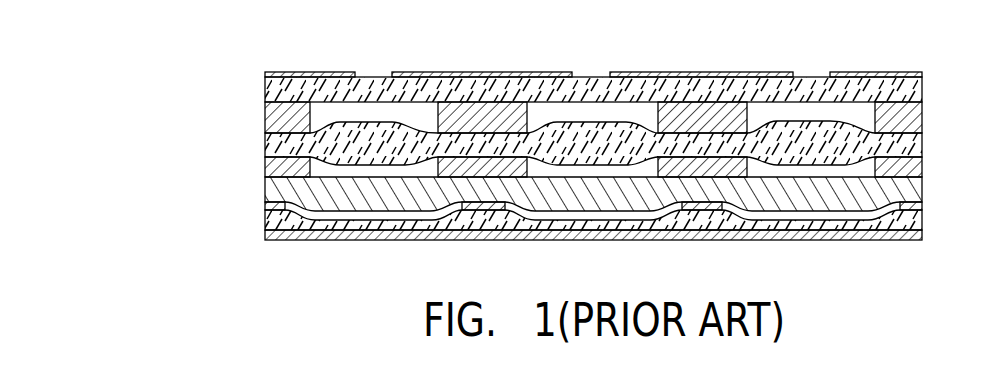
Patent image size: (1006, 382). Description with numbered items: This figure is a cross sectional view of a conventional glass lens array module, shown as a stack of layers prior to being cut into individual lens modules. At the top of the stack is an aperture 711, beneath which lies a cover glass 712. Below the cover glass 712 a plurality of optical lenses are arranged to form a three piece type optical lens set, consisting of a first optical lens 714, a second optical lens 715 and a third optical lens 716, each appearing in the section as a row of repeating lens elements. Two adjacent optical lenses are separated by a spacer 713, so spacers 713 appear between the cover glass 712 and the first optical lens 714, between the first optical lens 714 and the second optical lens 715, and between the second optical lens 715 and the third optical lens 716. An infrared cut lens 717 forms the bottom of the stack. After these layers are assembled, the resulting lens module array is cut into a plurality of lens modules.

The aperture 711 is at (887, 72).
The cover glass 712 is at (905, 87).
The spacer 713 is at (907, 117).
The first optical lens 714 is at (903, 145).
The second optical lens 715 is at (907, 188).
The third optical lens 716 is at (923, 220).
The infrared (IR) cut lens 717 is at (897, 238).